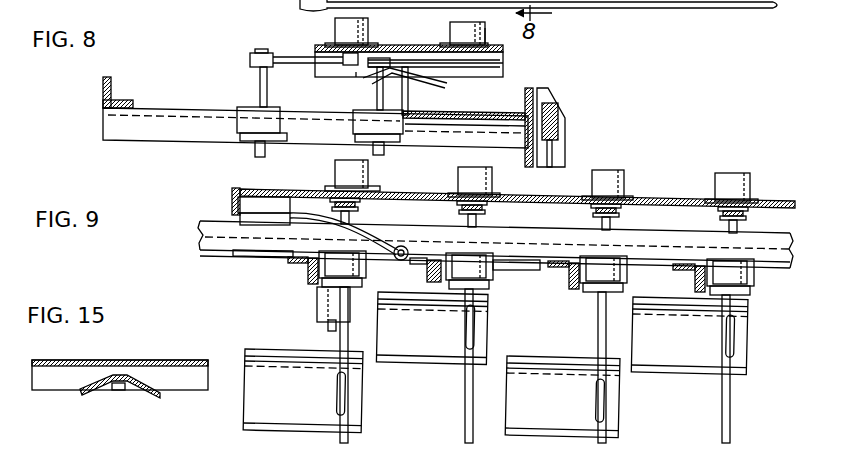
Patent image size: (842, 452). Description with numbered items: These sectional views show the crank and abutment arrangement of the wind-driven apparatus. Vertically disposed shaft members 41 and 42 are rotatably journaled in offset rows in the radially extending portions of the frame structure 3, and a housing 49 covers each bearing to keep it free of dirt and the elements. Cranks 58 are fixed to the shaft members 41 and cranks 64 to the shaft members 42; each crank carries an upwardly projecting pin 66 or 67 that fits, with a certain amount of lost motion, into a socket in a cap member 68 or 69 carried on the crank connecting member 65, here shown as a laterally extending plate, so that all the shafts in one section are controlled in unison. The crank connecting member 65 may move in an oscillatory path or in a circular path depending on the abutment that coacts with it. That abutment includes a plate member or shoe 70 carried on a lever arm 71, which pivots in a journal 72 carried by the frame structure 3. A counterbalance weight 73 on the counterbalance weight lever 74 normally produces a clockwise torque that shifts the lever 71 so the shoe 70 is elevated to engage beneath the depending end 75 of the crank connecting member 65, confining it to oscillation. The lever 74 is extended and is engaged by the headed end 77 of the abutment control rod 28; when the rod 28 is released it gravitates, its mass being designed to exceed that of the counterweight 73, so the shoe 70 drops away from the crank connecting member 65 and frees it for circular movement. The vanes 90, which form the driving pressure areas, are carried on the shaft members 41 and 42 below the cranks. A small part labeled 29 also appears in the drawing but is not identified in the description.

In FIG. 8, the frame structure 3 is at (125, 101).
In FIG. 8, the abutment control rod 28 is at (553, 147).
In FIG. 9, the abutment control rod 28 is at (328, 328).
In FIG. 8, the pin 29 is at (560, 156).
In FIG. 9, the pin 29 is at (327, 326).
In FIG. 8, the shaft members 41 is at (374, 93).
In FIG. 9, the shaft members 42 is at (346, 395).
In FIG. 8, the housing 49 is at (257, 120).
In FIG. 9, the housing 49 is at (335, 266).
In FIG. 8, the crank 58 is at (288, 58).
In FIG. 9, the crank 58 is at (592, 214).
In FIG. 8, the crank 64 is at (452, 73).
In FIG. 8, the crank connecting member 65 is at (388, 50).
In FIG. 15, the crank connecting member 65 is at (94, 360).
In FIG. 8, the pin 66 is at (352, 70).
In FIG. 9, the pin 66 is at (660, 196).
In FIG. 8, the pin 67 is at (505, 64).
In FIG. 8, the cap member 68 is at (362, 34).
In FIG. 9, the cap member 68 is at (541, 181).
In FIG. 8, the cap member 69 is at (487, 40).
In FIG. 8, the shoe 70 is at (428, 77).
In FIG. 9, the shoe 70 is at (254, 215).
In FIG. 15, the shoe 70 is at (128, 398).
In FIG. 8, the lever arm 71 is at (417, 120).
In FIG. 9, the lever arm 71 is at (301, 223).
In FIG. 15, the lever arm 71 is at (113, 393).
In FIG. 8, the journal 72 is at (463, 120).
In FIG. 9, the journal 72 is at (406, 246).
In FIG. 8, the counterbalance weight 73 is at (553, 110).
In FIG. 9, the counterbalance weight 73 is at (493, 280).
In FIG. 9, the counterbalance weight lever 74 is at (428, 263).
In FIG. 9, the depending end 75 is at (231, 203).
In FIG. 9, the headed end 77 is at (325, 214).
In FIG. 9, the vanes 90 is at (433, 343).